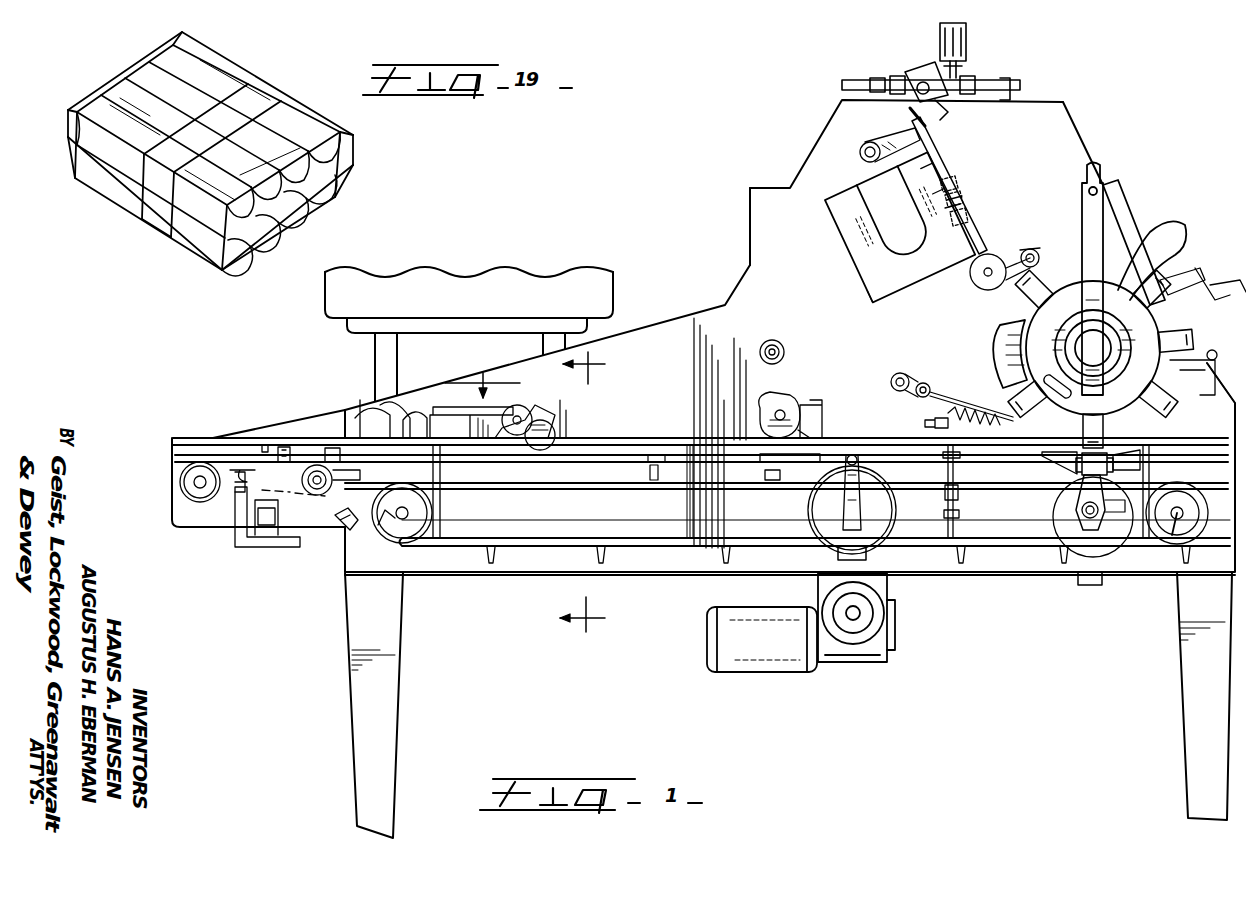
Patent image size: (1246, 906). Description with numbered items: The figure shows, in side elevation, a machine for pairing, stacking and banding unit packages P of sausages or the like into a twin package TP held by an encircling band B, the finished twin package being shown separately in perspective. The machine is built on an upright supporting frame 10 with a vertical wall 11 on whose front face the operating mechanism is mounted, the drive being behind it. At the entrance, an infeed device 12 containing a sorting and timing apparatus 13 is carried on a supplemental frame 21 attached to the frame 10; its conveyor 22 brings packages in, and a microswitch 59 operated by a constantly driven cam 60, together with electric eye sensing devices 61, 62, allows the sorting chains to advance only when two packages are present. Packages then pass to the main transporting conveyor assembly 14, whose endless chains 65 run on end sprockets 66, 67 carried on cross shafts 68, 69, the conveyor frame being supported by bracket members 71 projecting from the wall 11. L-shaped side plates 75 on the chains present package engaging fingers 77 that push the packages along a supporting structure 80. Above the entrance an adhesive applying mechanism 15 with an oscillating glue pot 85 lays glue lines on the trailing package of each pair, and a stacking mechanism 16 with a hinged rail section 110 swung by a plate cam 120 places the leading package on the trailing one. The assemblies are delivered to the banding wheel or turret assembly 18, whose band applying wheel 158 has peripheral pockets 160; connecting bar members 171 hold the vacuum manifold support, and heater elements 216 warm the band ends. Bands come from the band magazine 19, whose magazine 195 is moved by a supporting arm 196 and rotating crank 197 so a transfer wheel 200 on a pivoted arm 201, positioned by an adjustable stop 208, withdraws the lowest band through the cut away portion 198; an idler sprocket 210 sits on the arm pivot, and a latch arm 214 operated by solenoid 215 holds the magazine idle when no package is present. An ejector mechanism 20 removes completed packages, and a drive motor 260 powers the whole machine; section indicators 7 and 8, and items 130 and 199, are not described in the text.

In FIG. 19, the unit package P is at (112, 105).
In FIG. 19, the label forming band B is at (235, 85).
In FIG. 19, the twin package TP is at (173, 208).
In FIG. 1, the section line 7 is at (482, 373).
In FIG. 1, the section line 8 is at (585, 485).
In FIG. 1, the upright supporting frame 10 is at (660, 318).
In FIG. 1, the vertical face or wall 11 is at (783, 200).
In FIG. 1, the infeed device 12 is at (204, 435).
In FIG. 1, the sorting and timing apparatus 13 is at (333, 403).
In FIG. 1, the main transporting conveyor assembly 14 is at (626, 433).
In FIG. 1, the adhesive applying mechanism 15 is at (532, 414).
In FIG. 1, the stacking mechanism 16 is at (905, 455).
In FIG. 1, the banding wheel or turret assembly 18 is at (1137, 213).
In FIG. 1, the band magazine 19 is at (962, 175).
In FIG. 1, the ejector mechanism 20 is at (1183, 242).
In FIG. 1, the supplemental frame 21 is at (173, 443).
In FIG. 1, the infeed conveyor 22 is at (222, 492).
In FIG. 1, the microswitch 59 is at (378, 440).
In FIG. 1, the constantly driven cam 60 is at (412, 438).
In FIG. 1, the electric eye sensing device 61 is at (283, 450).
In FIG. 1, the electric eye sensing device 62 is at (333, 460).
In FIG. 1, the endless chain 65 is at (512, 545).
In FIG. 1, the end sprocket 66 is at (380, 528).
In FIG. 1, the end sprocket 67 is at (1187, 505).
In FIG. 1, the cross shaft 68 is at (398, 518).
In FIG. 1, the cross shaft 69 is at (1180, 520).
In FIG. 1, the bracket member 71 is at (440, 526).
In FIG. 1, the L-shaped side plate 75 is at (360, 522).
In FIG. 1, the package engaging finger 77 is at (330, 530).
In FIG. 1, the supporting structure 80 is at (600, 445).
In FIG. 1, the glue pot 85 is at (470, 410).
In FIG. 1, the hinged rail section 110 is at (803, 460).
In FIG. 1, the plate cam 120 is at (882, 526).
In FIG. 1, the cam 130 is at (778, 410).
In FIG. 1, the band applying wheel 158 is at (990, 352).
In FIG. 1, the pocket 160 is at (1180, 408).
In FIG. 1, the connecting bar member 171 is at (1127, 576).
In FIG. 1, the magazine 195 is at (860, 243).
In FIG. 1, the supporting arm 196 is at (900, 148).
In FIG. 1, the rotating crank 197 is at (960, 188).
In FIG. 1, the cut away portion 198 is at (965, 210).
In FIG. 1, the element 199 is at (970, 228).
In FIG. 1, the transfer wheel 200 is at (975, 278).
In FIG. 1, the pivoted arm 201 is at (1033, 250).
In FIG. 1, the adjustably mounted stop 208 is at (935, 134).
In FIG. 1, the idler sprocket 210 is at (950, 204).
In FIG. 1, the latch arm 214 is at (920, 78).
In FIG. 1, the solenoid 215 is at (968, 42).
In FIG. 1, the heater element 216 is at (975, 410).
In FIG. 1, the drive motor 260 is at (790, 645).